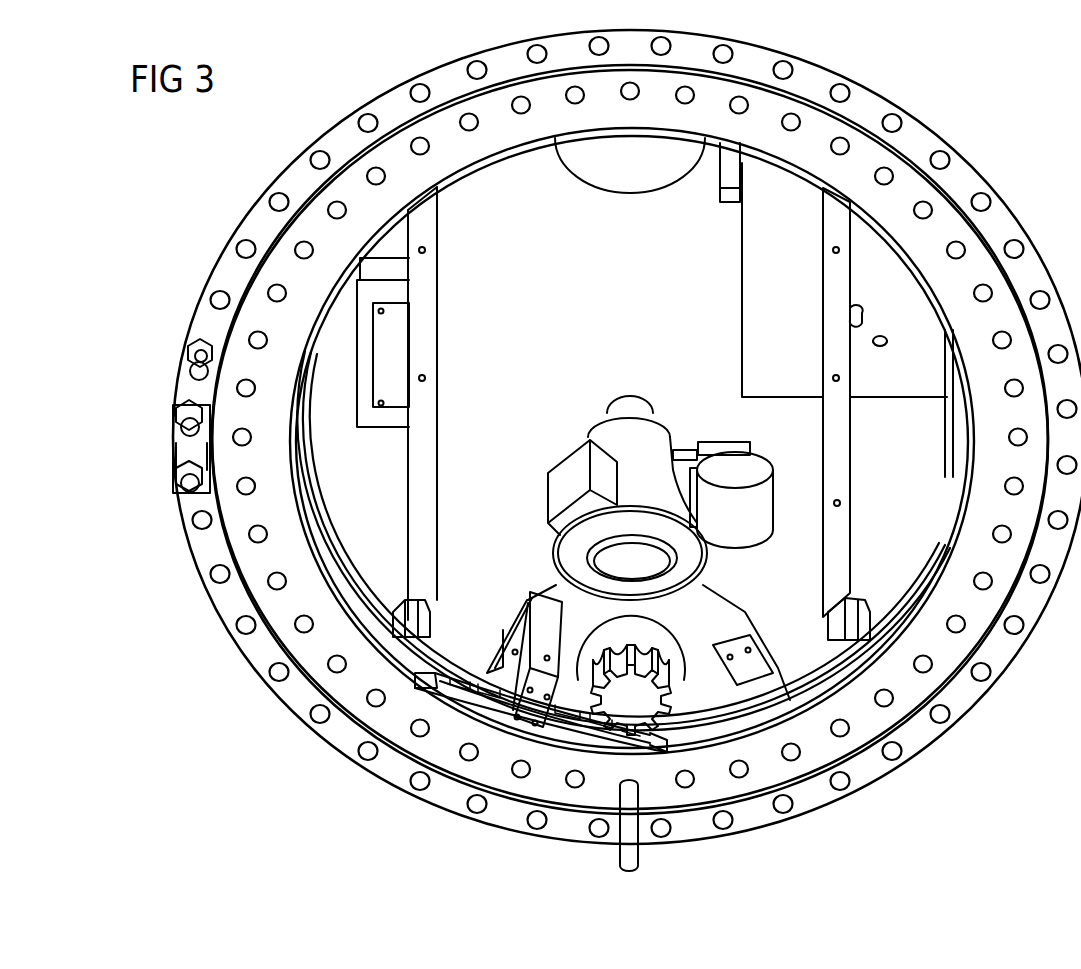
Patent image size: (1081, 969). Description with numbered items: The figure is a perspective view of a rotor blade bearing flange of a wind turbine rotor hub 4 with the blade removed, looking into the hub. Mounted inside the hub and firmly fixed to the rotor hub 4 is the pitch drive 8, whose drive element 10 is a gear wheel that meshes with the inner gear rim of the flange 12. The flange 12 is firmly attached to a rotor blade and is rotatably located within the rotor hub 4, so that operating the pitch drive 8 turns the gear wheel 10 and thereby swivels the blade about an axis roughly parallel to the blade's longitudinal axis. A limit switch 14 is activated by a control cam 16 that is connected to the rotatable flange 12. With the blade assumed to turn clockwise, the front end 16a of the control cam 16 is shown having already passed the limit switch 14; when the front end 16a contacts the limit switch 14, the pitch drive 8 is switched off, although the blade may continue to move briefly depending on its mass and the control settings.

The rotor hub 4 is at (295, 690).
The pitch drive 8 is at (610, 443).
The drive element 10 is at (648, 660).
The flange 12 is at (905, 684).
The limit switch 14 is at (530, 716).
The control cam 16 is at (458, 705).
The front end of control cam 16a is at (437, 653).